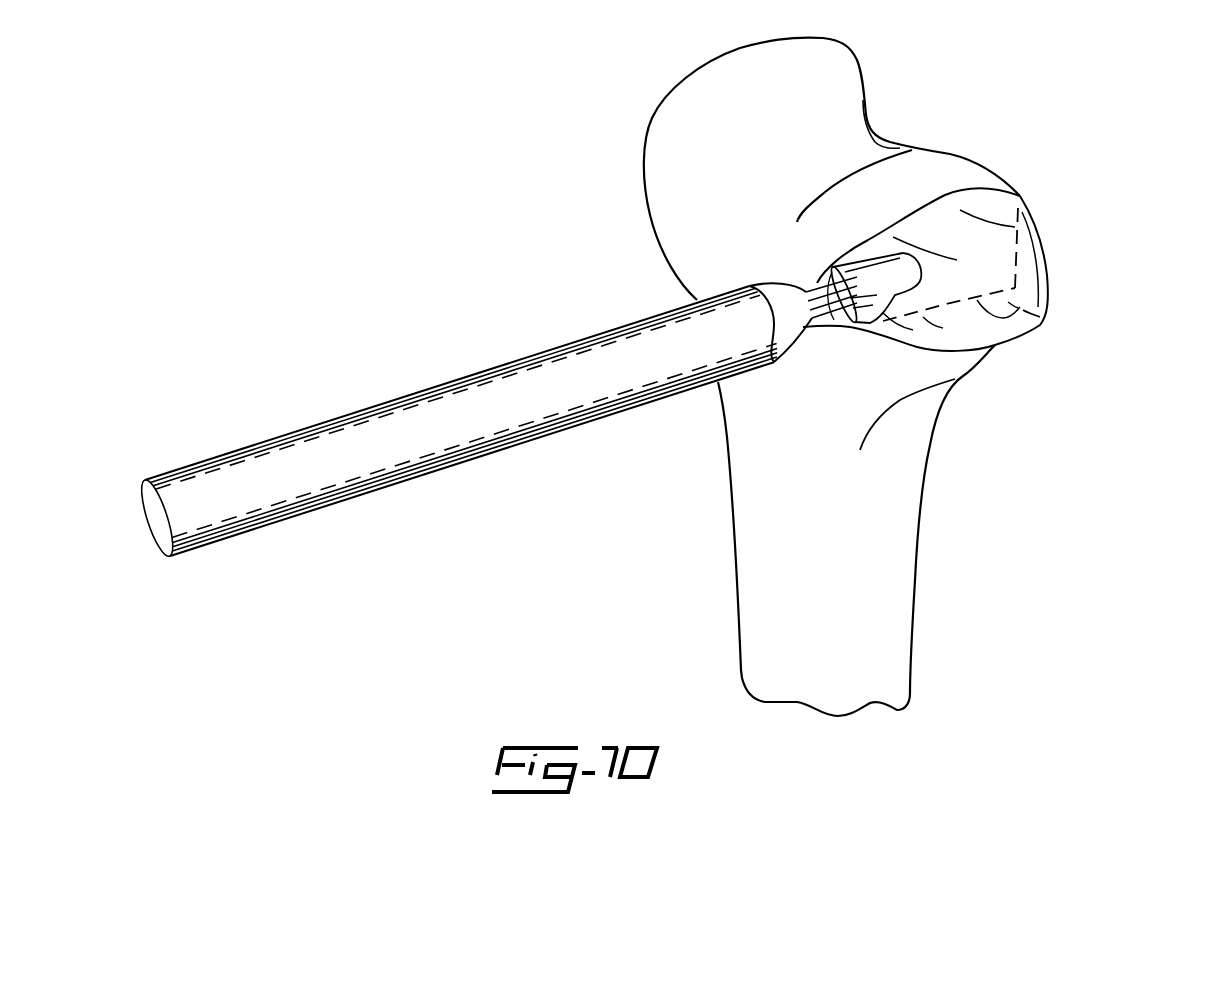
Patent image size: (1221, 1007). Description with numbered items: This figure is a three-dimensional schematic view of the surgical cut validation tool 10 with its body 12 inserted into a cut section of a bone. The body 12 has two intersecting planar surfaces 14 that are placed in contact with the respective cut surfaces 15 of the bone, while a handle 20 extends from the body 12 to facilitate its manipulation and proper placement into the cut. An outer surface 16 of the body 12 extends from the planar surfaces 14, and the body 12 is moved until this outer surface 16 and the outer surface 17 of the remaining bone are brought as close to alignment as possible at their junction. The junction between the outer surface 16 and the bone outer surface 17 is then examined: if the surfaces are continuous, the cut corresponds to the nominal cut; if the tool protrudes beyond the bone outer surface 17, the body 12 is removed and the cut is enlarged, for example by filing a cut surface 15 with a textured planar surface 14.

The surgical cut validation tool 10 is at (496, 499).
The body 12 is at (1024, 192).
The planar surface 14 is at (1015, 288).
The cut surface 15 is at (1016, 248).
The outer surface 16 is at (978, 238).
The outer surface of the bone 17 is at (969, 177).
The handle 20 is at (257, 473).